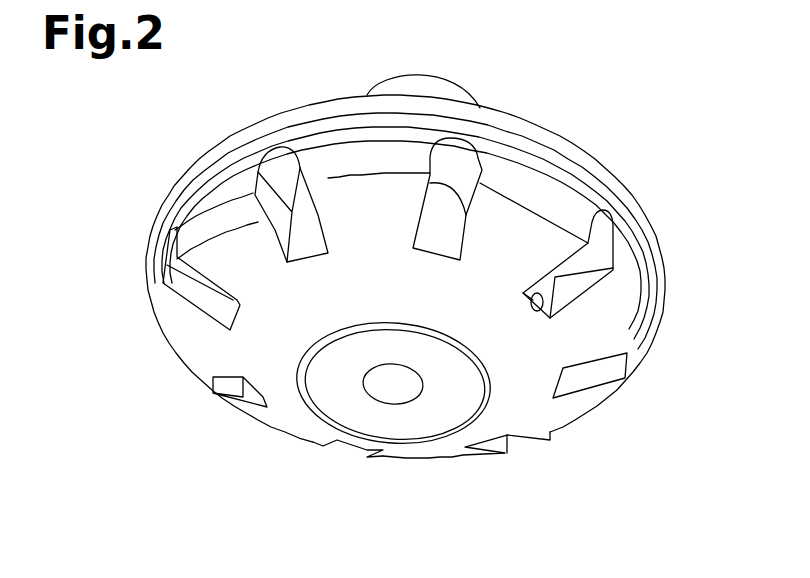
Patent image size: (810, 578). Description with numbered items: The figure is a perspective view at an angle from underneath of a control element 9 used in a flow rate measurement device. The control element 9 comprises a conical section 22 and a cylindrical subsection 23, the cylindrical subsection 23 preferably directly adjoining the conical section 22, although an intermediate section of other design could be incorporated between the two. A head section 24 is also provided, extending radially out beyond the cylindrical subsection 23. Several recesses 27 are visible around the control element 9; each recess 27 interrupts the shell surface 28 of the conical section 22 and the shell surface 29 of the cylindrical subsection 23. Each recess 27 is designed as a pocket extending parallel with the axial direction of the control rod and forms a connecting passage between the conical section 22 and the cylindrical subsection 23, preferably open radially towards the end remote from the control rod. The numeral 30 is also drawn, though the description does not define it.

The control element 9 is at (665, 75).
The conical section 22 is at (539, 403).
The cylindrical subsection 23 is at (532, 191).
The head section 24 is at (671, 304).
The recess 27 is at (458, 157).
The shell surface 28 is at (256, 345).
The shell surface 29 is at (318, 165).
The outer edge 30 is at (137, 216).